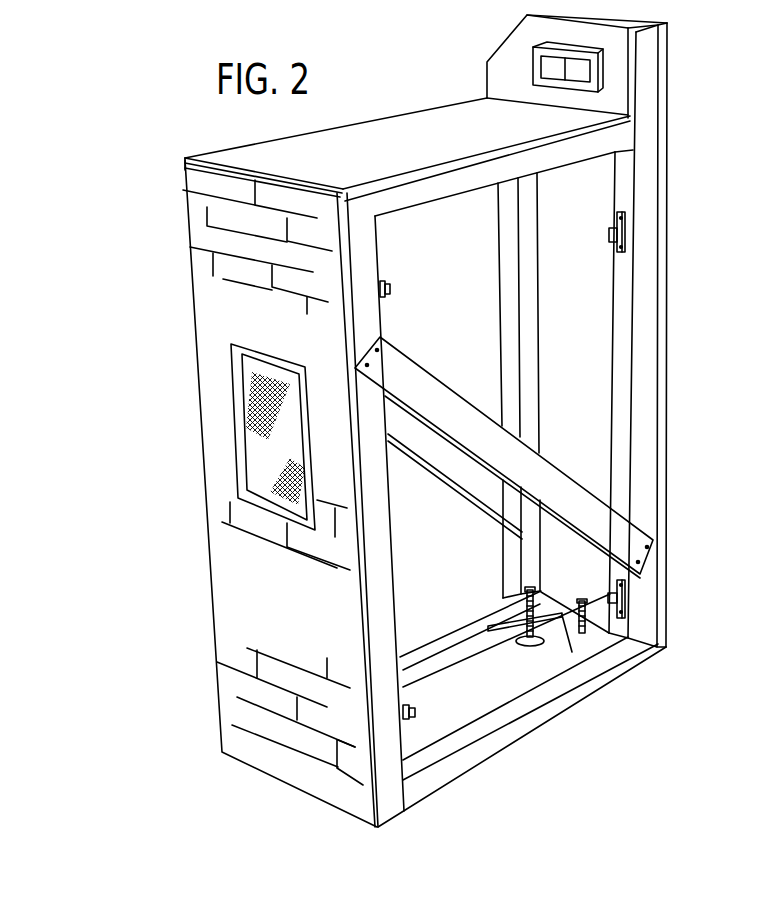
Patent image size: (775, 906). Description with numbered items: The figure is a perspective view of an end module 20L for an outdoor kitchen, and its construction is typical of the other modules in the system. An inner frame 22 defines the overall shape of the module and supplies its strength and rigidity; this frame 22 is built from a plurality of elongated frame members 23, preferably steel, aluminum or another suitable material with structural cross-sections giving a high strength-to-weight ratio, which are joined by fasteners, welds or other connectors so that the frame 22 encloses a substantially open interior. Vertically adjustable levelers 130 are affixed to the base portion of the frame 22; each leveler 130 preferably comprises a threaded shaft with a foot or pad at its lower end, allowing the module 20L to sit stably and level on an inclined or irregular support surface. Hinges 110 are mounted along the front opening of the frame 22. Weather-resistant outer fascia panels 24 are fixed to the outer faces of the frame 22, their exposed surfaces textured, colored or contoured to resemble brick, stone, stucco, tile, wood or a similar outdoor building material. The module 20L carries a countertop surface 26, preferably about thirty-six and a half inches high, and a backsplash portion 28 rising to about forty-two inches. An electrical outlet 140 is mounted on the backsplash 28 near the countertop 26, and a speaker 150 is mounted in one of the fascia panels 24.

The left end module 20L is at (467, 89).
The inner frame 22 is at (650, 406).
The frame members 23 is at (383, 648).
The fascia panels 24 is at (265, 690).
The countertop surface 26 is at (237, 155).
The backsplash portion 28 is at (512, 53).
The hinge 110 is at (618, 217).
The levelers 130 is at (538, 645).
The electrical outlets 140 is at (597, 72).
The speakers 150 is at (248, 428).